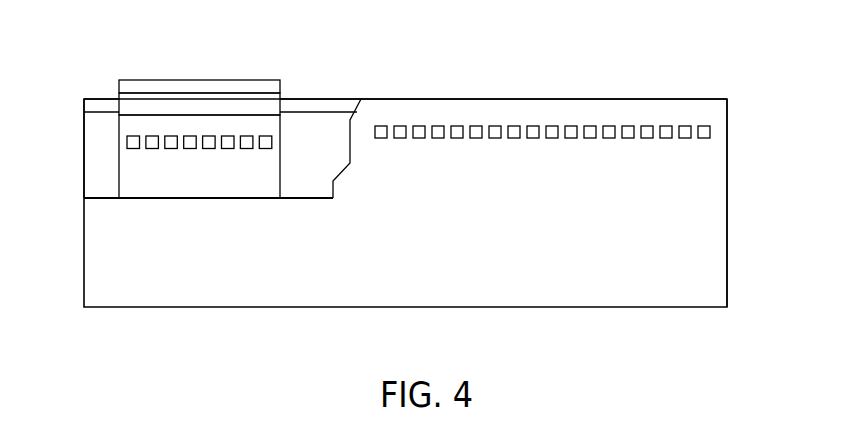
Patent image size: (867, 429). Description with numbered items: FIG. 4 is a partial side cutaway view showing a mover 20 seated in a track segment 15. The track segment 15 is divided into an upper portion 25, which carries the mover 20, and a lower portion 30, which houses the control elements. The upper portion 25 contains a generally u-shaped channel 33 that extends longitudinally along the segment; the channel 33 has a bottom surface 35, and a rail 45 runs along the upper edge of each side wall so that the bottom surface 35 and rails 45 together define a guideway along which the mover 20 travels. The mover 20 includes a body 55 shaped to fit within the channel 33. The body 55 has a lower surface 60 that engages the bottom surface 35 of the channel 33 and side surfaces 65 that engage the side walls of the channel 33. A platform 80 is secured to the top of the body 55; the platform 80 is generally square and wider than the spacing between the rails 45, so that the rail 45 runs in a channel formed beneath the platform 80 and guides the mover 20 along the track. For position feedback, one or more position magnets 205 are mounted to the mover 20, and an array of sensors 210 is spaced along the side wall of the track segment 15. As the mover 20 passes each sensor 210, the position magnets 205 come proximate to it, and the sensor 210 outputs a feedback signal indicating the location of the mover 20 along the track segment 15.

The track segment 15 is at (690, 70).
The mover 20 is at (195, 80).
The upper portion 25 is at (735, 203).
The lower portion 30 is at (735, 308).
The channel 33 is at (98, 152).
The bottom surface 35 is at (308, 198).
The rail 45 is at (335, 99).
The body 55 is at (208, 180).
The lower surface 60 is at (162, 199).
The side surfaces 65 is at (185, 187).
The platform 80 is at (142, 85).
The position magnets 205 is at (264, 150).
The sensors 210 is at (571, 139).